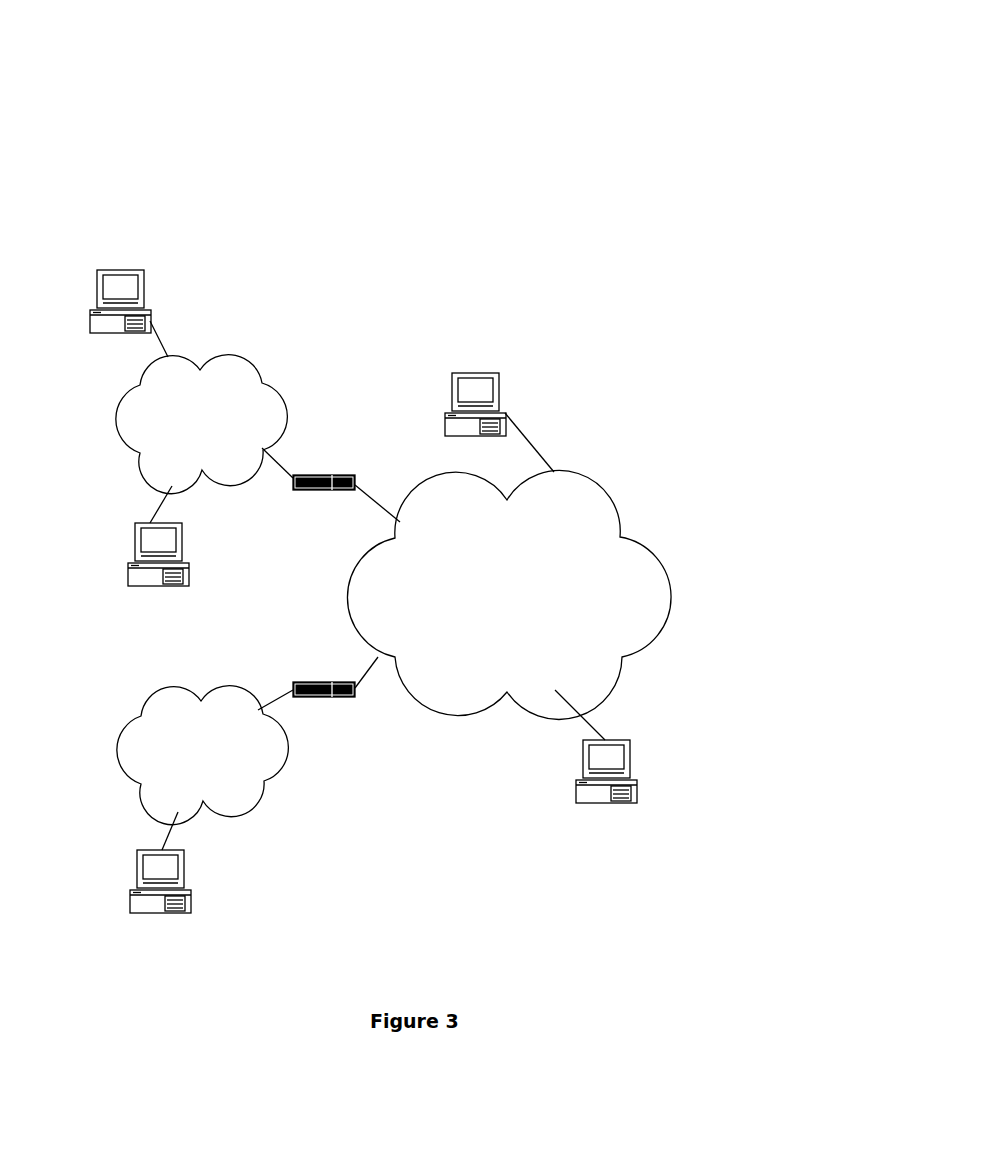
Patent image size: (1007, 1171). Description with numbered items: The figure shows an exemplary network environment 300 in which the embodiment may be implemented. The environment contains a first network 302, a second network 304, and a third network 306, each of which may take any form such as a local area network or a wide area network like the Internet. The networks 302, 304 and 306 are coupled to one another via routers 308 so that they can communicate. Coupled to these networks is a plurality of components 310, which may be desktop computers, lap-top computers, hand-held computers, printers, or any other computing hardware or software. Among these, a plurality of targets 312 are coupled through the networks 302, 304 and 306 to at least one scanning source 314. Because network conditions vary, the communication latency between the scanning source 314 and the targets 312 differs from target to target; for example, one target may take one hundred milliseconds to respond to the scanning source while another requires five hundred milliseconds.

The network environment 300 is at (726, 205).
The first network 302 is at (668, 596).
The second network 304 is at (262, 386).
The third network 306 is at (120, 743).
The routers 308 is at (325, 476).
The components 310 is at (629, 853).
The targets 312 is at (120, 270).
The scanning source 314 is at (638, 786).